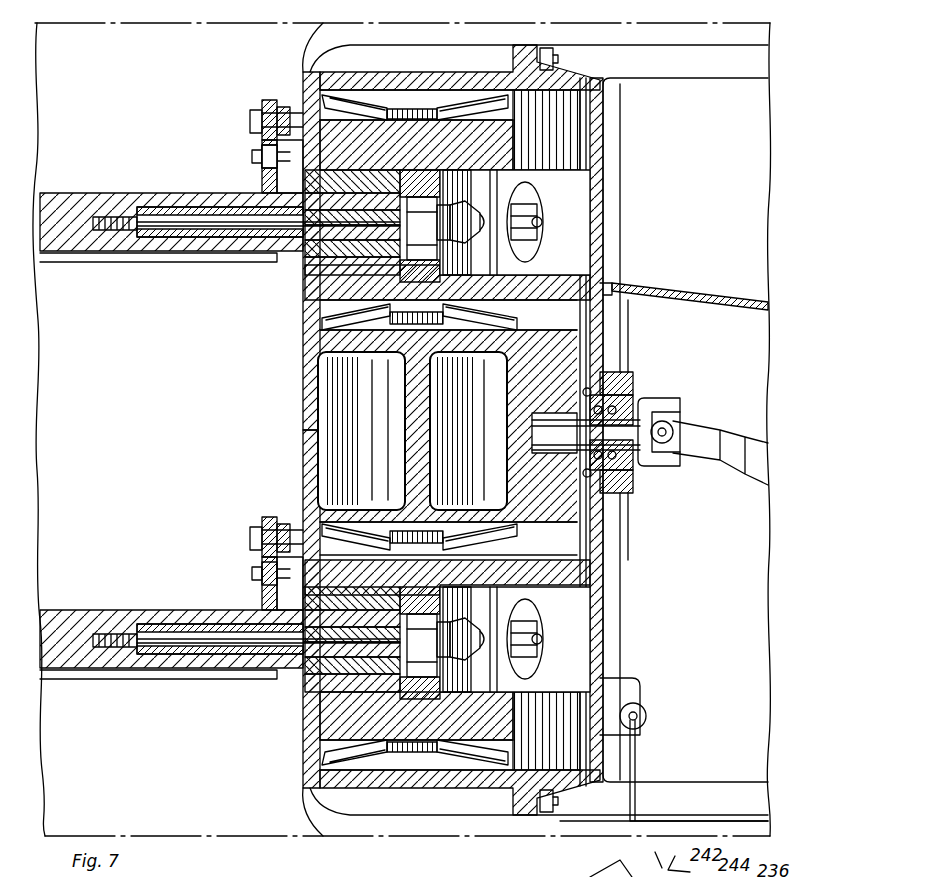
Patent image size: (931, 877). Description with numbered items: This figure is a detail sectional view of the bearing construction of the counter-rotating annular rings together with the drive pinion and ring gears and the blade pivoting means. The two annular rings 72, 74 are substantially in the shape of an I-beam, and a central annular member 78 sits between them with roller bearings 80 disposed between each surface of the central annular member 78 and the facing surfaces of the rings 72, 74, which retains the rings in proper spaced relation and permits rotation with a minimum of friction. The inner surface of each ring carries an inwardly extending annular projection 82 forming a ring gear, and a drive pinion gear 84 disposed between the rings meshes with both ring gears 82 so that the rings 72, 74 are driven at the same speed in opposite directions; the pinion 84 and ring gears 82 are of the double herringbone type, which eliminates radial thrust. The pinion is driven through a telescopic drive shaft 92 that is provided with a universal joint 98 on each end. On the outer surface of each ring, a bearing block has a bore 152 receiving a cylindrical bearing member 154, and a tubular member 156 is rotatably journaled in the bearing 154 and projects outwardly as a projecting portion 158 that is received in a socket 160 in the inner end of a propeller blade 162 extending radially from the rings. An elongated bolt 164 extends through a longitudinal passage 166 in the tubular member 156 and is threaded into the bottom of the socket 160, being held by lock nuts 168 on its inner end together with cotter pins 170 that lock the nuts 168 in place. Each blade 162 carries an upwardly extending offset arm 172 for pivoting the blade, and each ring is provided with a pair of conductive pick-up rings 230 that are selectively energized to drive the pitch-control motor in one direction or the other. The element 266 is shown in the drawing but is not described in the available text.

The annular ring 72 is at (478, 94).
The annular ring 74 is at (300, 585).
The central annular member 78 is at (312, 376).
The roller bearings 80 is at (480, 322).
The annular projection 82 is at (553, 298).
The drive pinion gear 84 is at (566, 376).
The telescopic drive shaft 92 is at (742, 460).
The universal joint 98 is at (664, 406).
The bore 152 is at (305, 276).
The cylindrical bearing member 154 is at (306, 682).
The tubular member 156 is at (290, 661).
The projecting portion 158 is at (185, 655).
The socket 160 is at (153, 658).
The propeller blade 162 is at (57, 622).
The elongated bolt 164 is at (166, 636).
The longitudinal passage 166 is at (187, 218).
The lock nuts 168 is at (420, 190).
The cotter pins 170 is at (542, 630).
The offset arm 172 is at (265, 524).
The conductive pick-up ring 230 is at (307, 128).
The bracket 266 is at (638, 776).